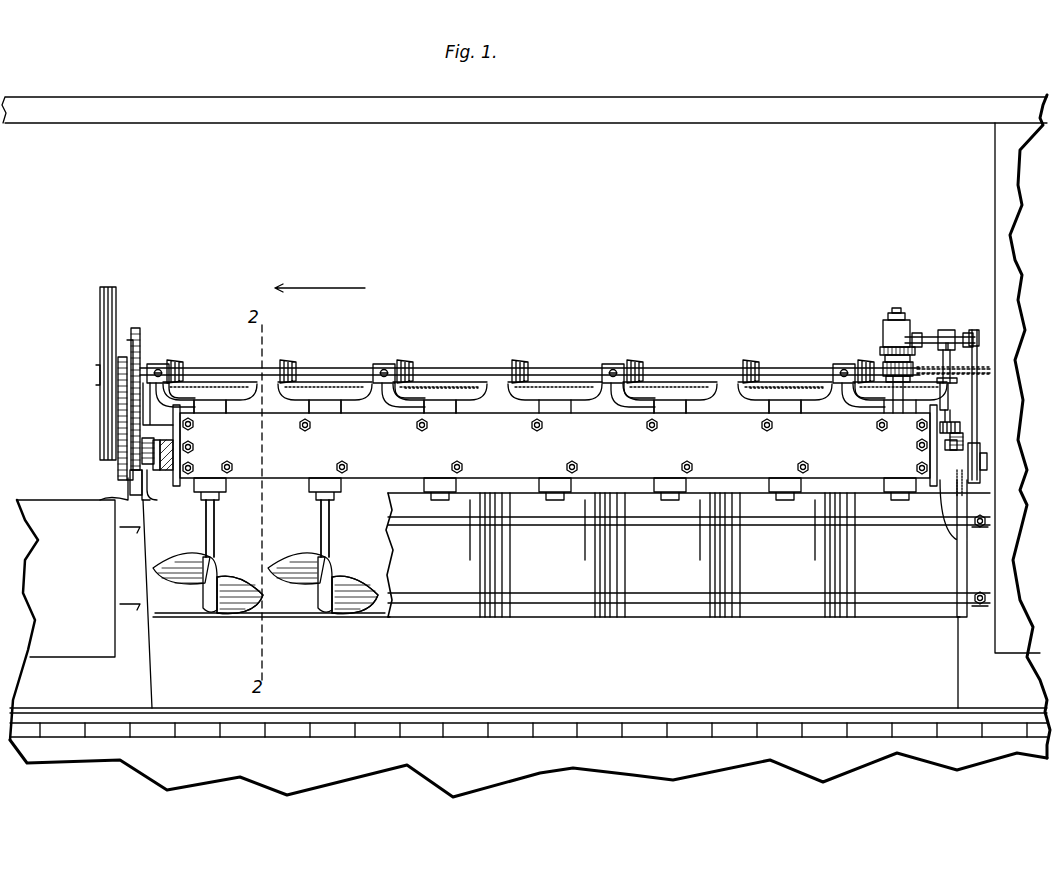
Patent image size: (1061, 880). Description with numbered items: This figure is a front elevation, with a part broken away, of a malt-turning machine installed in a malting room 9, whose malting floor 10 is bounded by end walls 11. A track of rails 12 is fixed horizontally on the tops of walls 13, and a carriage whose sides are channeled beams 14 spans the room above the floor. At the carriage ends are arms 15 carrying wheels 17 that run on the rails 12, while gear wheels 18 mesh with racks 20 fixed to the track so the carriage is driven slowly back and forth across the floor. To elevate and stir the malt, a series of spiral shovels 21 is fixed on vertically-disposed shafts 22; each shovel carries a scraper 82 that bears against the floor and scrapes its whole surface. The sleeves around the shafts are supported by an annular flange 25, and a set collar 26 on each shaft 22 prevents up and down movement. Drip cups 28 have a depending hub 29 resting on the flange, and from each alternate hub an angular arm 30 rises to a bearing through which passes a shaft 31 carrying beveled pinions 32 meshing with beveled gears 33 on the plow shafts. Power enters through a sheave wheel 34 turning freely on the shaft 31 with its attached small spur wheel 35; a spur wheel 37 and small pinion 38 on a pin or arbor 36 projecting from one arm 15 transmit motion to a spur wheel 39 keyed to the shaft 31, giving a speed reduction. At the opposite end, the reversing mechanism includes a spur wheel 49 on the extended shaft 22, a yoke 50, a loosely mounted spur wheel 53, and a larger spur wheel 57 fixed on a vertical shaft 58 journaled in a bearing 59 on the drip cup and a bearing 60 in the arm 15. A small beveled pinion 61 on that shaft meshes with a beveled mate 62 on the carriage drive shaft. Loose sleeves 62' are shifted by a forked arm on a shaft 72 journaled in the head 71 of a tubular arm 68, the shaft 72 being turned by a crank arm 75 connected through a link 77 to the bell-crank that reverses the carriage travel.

The malting room 9 is at (526, 426).
The malting floor 10 is at (385, 617).
The end walls 11 is at (808, 578).
The rails 12 is at (140, 487).
The walls 13 is at (130, 520).
The channeled beams 14 is at (555, 445).
The arms 15 is at (180, 468).
The wheels 17 is at (133, 478).
The gear wheels 18 is at (160, 475).
The racks 20 is at (150, 490).
The spiral shovels 21 is at (222, 578).
The vertically-disposed shafts 22 is at (215, 518).
The annular flange 25 is at (335, 412).
The set collar 26 is at (310, 492).
The drip cups 28 is at (350, 390).
The depending hub 29 is at (450, 412).
The angular arm 30 is at (190, 402).
The shaft 31 is at (470, 368).
The beveled pinions 32 is at (405, 362).
The beveled gears 33 is at (440, 385).
The sheave wheel 34 is at (100, 312).
The small spur wheel 35 is at (122, 345).
The pin or arbor 36 is at (150, 372).
The spur wheel 37 is at (118, 410).
The small pinion 38 is at (120, 443).
The spur wheel 39 is at (140, 328).
The spur wheel 49 is at (900, 400).
The yoke 50 is at (893, 320).
The spur wheel 53 is at (890, 372).
The larger spur wheel 57 is at (962, 383).
The vertical shaft 58 is at (962, 410).
The bearing 59 is at (965, 395).
The bearing 60 is at (955, 432).
The small beveled pinion 61 is at (958, 425).
The beveled mate 62 is at (999, 431).
The sleeves 62' is at (931, 328).
The tubular arm 68 is at (950, 340).
The head 71 is at (948, 332).
The shaft 72 is at (912, 378).
The crank arm 75 is at (977, 350).
The link 77 is at (975, 345).
The scraper 82 is at (232, 617).